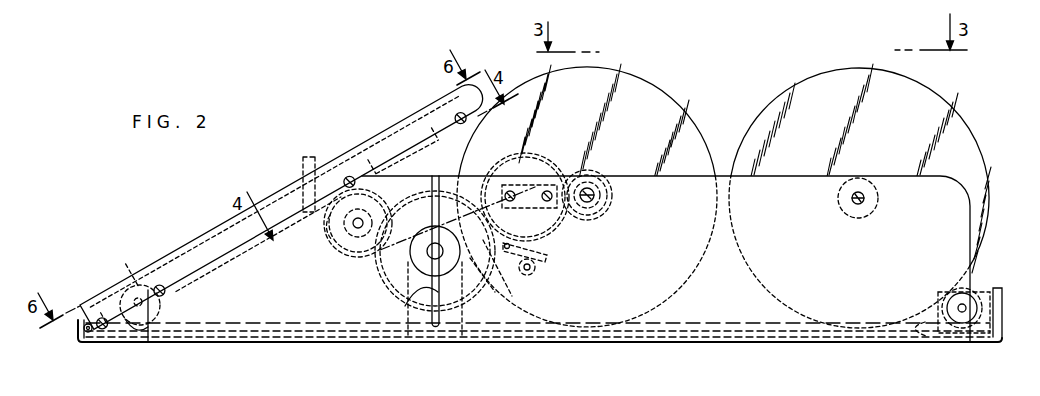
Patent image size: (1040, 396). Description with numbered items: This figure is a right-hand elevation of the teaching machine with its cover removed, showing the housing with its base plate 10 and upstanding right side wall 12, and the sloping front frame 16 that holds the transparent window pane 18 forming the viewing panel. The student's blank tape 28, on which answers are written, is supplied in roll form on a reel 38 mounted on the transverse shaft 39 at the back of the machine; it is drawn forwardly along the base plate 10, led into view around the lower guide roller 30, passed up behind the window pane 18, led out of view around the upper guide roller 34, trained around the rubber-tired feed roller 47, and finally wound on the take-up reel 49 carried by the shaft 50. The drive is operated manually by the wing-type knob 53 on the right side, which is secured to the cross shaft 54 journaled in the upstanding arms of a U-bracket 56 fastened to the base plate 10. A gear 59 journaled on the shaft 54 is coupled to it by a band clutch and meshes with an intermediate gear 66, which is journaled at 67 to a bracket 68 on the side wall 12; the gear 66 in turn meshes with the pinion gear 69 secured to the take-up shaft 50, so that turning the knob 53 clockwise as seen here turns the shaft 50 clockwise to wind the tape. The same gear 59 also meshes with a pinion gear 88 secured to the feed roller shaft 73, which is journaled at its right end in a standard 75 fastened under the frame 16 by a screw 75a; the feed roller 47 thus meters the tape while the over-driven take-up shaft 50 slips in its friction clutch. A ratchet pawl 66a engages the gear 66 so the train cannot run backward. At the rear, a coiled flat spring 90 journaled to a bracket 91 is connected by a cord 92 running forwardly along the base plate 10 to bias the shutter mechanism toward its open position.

The base plate 10 is at (790, 343).
The right side wall 12 is at (768, 176).
The rectangular frame 16 is at (97, 296).
The window pane 18 is at (201, 236).
The blank tape 28 is at (726, 322).
The guide roller 30 is at (138, 248).
The guide roller 34 is at (408, 112).
The reel 38 is at (965, 148).
The transverse shaft 39 is at (857, 210).
The feed roller 47 is at (330, 252).
The take-up reel 49 is at (667, 100).
The shaft 50 is at (592, 206).
The wing-type knob 53 is at (408, 307).
The cross shaft 54 is at (413, 254).
The U-bracket 56 is at (470, 345).
The gear 59 is at (520, 298).
The intermediate gear 66 is at (564, 235).
The ratchet pawl 66a is at (539, 266).
The journal 67 is at (534, 186).
The bracket 68 is at (529, 208).
The pinion gear 69 is at (612, 202).
The shaft 73 is at (358, 230).
The right standard 75 is at (335, 229).
The screw 75a is at (329, 154).
The pinion gear 88 is at (365, 186).
The coiled flat spring 90 is at (966, 292).
The bracket 91 is at (990, 327).
The cord 92 is at (910, 342).